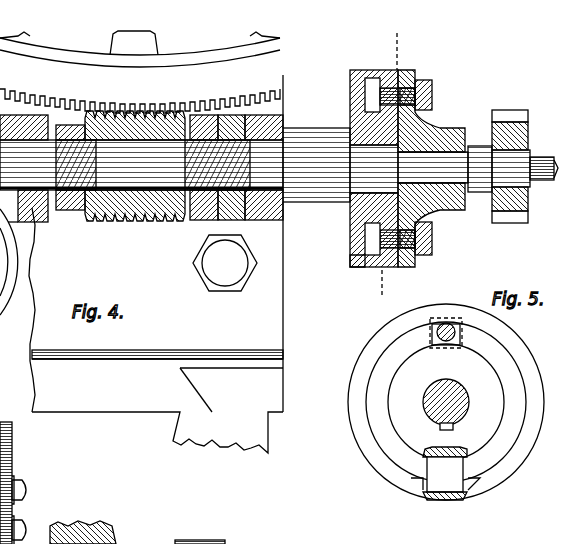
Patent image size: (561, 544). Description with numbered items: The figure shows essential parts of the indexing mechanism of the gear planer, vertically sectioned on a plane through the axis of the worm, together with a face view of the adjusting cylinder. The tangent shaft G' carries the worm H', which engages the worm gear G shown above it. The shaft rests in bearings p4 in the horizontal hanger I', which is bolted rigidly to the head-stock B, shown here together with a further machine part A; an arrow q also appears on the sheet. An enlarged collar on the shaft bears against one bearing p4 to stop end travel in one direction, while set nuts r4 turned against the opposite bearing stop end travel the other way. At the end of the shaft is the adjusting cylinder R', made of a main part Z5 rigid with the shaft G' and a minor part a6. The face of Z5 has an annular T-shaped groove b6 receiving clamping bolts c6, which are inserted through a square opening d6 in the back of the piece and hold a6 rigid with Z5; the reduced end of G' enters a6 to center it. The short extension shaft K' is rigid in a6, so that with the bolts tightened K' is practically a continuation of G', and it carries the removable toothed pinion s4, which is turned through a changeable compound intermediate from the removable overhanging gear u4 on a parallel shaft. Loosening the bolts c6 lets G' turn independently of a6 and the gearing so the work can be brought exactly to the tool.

In FIG. 4, the worm gear G is at (140, 72).
In FIG. 4, the tangent shaft G' is at (279, 165).
In FIG. 5, the tangent shaft G' is at (442, 396).
In FIG. 4, the bearings p4 is at (45, 222).
In FIG. 4, the worm H' is at (135, 177).
In FIG. 4, the set nuts r4 is at (222, 236).
In FIG. 4, the horizontal hanger I' is at (141, 309).
In FIG. 4, the head-stock B is at (157, 373).
In FIG. 4, the base A is at (231, 390).
In FIG. 4, the removable overhanging gear u4 is at (5, 422).
In FIG. 4, the direction arrow q is at (58, 446).
In FIG. 4, the main part of adjusting cylinder Z5 is at (360, 70).
In FIG. 5, the main part of adjusting cylinder Z5 is at (357, 432).
In FIG. 4, the annular T-shaped groove b6 is at (365, 108).
In FIG. 5, the annular T-shaped groove b6 is at (376, 380).
In FIG. 4, the adjusting cylinder R' is at (335, 102).
In FIG. 4, the clamping bolts c6 is at (432, 96).
In FIG. 5, the clamping bolts c6 is at (432, 334).
In FIG. 4, the square opening d6 is at (363, 239).
In FIG. 5, the square opening d6 is at (445, 473).
In FIG. 4, the minor part of adjusting cylinder a6 is at (410, 255).
In FIG. 4, the short extension shaft K' is at (480, 157).
In FIG. 4, the removable toothed pinion s4 is at (511, 223).